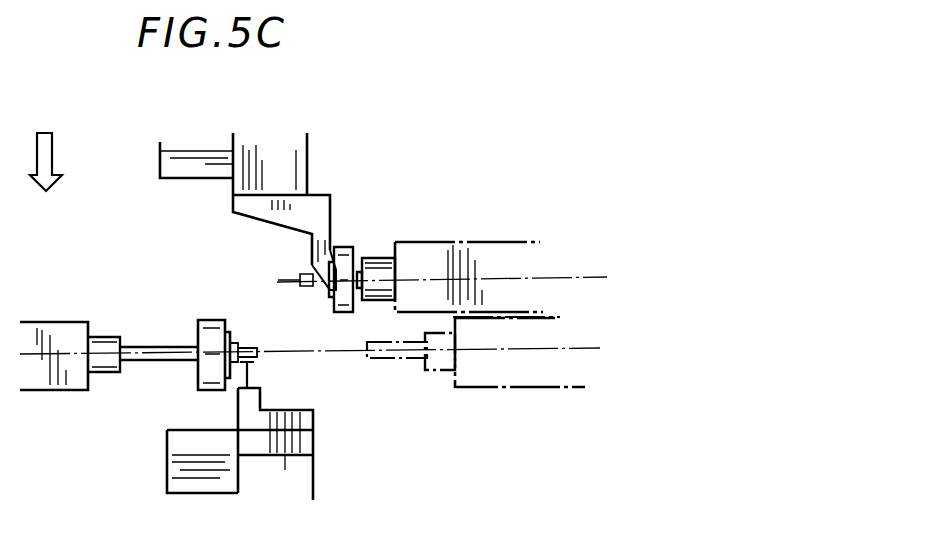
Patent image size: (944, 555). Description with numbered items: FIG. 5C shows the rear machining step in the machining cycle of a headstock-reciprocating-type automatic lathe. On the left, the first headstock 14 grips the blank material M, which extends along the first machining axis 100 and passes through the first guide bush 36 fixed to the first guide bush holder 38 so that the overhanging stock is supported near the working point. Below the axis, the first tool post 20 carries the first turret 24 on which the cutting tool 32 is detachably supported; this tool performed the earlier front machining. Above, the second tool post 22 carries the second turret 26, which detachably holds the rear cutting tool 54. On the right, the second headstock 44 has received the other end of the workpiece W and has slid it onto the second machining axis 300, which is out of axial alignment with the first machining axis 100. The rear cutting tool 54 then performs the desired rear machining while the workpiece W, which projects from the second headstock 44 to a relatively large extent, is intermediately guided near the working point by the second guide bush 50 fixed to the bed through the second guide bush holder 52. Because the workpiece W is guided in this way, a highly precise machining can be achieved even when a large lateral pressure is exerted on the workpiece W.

The first headstock 14 is at (63, 325).
The first tool post 20 is at (183, 447).
The second tool post 22 is at (160, 168).
The first turret 24 is at (297, 467).
The second turret 26 is at (292, 178).
The cutting tool 32 is at (250, 366).
The first guide bush 36 is at (241, 325).
The first guide bush holder 38 is at (213, 320).
The second headstock 44 is at (515, 260).
The second guide bush 50 is at (355, 247).
The second guide bush holder 52 is at (343, 247).
The rear cutting tool 54 is at (313, 248).
The first machining axis 100 is at (340, 352).
The second machining axis 300 is at (483, 277).
The blank material M is at (150, 346).
The workpiece W is at (312, 290).